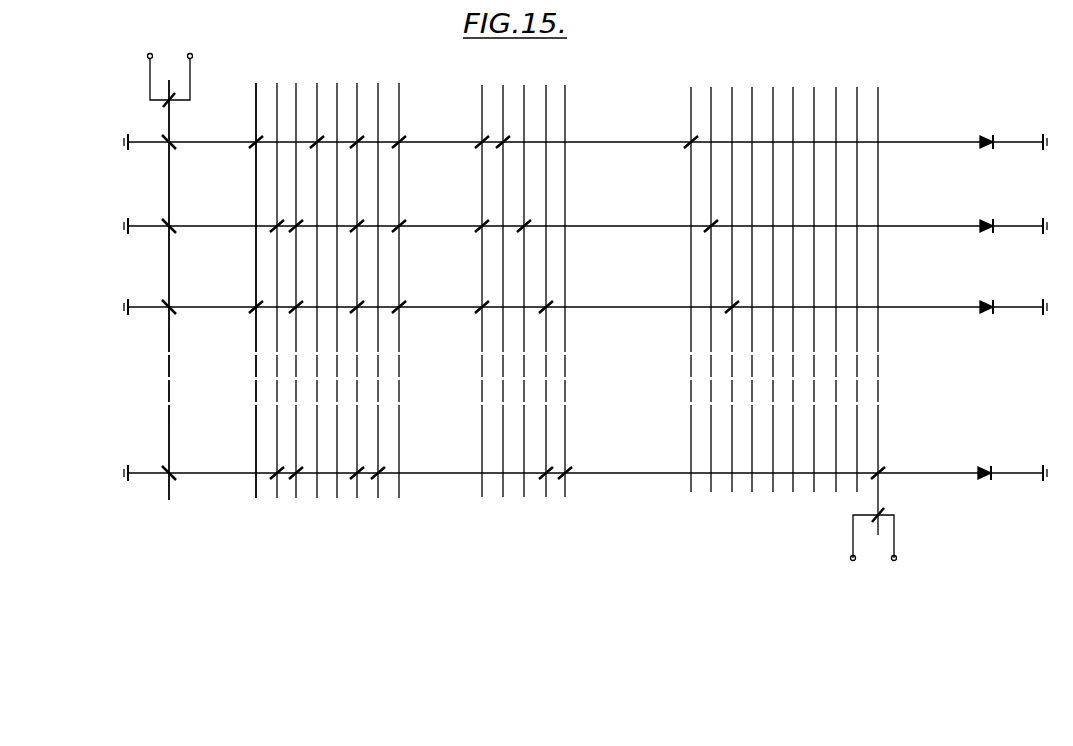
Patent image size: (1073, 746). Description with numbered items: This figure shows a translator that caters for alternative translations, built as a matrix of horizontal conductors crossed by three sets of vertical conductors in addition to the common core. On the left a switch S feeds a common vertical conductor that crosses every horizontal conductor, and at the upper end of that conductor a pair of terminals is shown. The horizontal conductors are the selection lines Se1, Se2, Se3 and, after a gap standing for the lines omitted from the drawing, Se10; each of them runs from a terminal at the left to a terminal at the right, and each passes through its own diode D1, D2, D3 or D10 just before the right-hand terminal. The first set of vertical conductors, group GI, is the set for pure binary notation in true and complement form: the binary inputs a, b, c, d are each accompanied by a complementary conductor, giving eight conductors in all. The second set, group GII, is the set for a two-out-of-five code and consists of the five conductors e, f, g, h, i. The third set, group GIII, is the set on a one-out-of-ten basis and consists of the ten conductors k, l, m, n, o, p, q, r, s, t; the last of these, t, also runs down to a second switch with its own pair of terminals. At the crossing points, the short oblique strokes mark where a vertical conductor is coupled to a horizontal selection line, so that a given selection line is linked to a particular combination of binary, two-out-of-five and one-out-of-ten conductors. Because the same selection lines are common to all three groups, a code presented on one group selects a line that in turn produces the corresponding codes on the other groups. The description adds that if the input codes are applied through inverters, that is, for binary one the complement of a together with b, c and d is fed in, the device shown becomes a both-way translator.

The switch S is at (170, 271).
The selection line 1 Se1 is at (943, 134).
The selection line 2 Se2 is at (934, 224).
The selection line 3 Se3 is at (932, 299).
The selection line 10 Se10 is at (932, 464).
The diode 1 D1 is at (993, 130).
The diode 2 D2 is at (995, 213).
The diode 3 D3 is at (994, 295).
The diode 10 D10 is at (1000, 461).
The conductor group I GI is at (330, 290).
The conductor group II GII is at (524, 292).
The conductor group III GIII is at (790, 309).
The conductor a is at (256, 278).
The binary input b is at (300, 278).
The binary input c is at (340, 278).
The binary input d is at (378, 278).
The conductor e is at (482, 277).
The conductor f is at (504, 277).
The conductor g is at (524, 277).
The conductor h is at (547, 277).
The conductor i is at (569, 277).
The conductor k is at (692, 275).
The conductor l is at (712, 275).
The conductor m is at (729, 275).
The conductor n is at (752, 275).
The conductor o is at (773, 275).
The conductor p is at (793, 275).
The conductor q is at (815, 275).
The conductor r is at (838, 275).
The conductor s is at (855, 275).
The conductor t is at (874, 309).